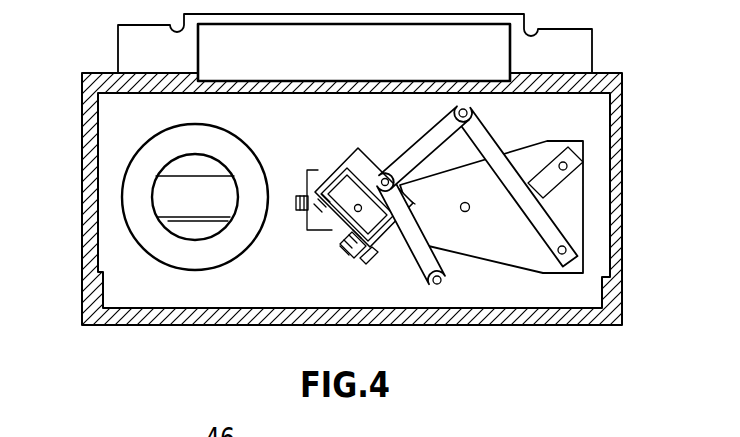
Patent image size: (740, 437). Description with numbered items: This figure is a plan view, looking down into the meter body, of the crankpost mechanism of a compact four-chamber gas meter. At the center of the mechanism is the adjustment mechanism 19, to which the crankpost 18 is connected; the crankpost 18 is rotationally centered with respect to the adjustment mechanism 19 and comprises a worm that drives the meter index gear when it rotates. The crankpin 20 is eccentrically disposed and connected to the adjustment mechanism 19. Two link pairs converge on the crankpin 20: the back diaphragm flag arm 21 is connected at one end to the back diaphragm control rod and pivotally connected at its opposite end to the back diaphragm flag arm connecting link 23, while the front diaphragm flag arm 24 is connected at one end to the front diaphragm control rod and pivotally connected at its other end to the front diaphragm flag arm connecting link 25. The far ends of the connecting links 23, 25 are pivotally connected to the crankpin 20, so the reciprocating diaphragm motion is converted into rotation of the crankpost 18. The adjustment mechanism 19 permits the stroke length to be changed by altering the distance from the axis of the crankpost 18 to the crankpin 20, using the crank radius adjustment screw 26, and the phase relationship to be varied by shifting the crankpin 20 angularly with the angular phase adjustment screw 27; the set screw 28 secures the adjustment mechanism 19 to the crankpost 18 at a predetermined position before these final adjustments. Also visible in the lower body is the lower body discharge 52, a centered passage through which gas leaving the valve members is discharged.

The crankpost 18 is at (356, 211).
The adjustment mechanism 19 is at (337, 168).
The crankpin 20 is at (386, 176).
The back diaphragm flag arm 21 is at (553, 224).
The back diaphragm flag arm connecting link 23 is at (463, 124).
The front diaphragm flag arm 24 is at (467, 262).
The front diaphragm flag arm connecting link 25 is at (427, 263).
The crank radius adjustment screw 26 is at (307, 229).
The angular phase adjustment screw 27 is at (365, 261).
The set screw 28 is at (345, 237).
The lower body discharge 52 is at (165, 195).